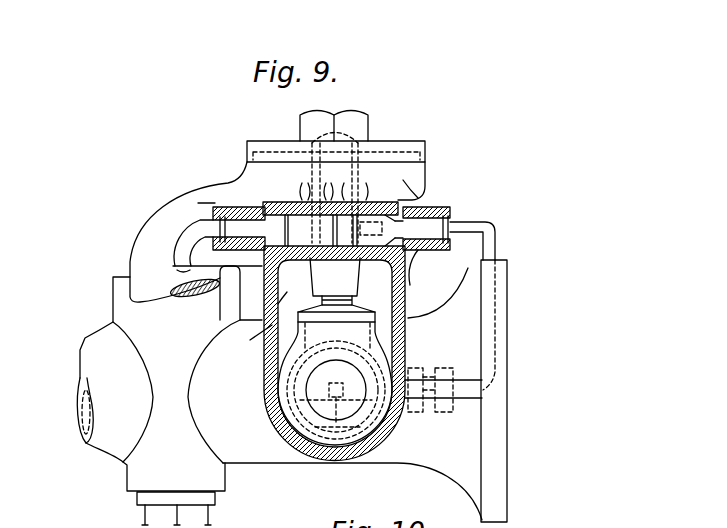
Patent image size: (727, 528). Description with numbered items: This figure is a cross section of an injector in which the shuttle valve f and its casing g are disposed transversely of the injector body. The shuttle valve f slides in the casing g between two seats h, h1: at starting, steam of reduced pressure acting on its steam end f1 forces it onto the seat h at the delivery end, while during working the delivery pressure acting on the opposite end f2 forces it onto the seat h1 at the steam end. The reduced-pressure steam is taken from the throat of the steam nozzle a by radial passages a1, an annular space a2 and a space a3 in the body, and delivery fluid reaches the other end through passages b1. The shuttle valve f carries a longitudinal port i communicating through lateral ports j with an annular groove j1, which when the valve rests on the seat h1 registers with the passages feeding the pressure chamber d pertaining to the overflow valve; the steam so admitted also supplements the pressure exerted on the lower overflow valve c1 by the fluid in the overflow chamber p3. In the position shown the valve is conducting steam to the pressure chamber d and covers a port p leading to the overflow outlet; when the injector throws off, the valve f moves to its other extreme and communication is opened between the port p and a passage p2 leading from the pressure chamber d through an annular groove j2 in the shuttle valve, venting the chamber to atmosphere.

The steam nozzle a is at (277, 340).
The radial passages a1 is at (394, 441).
The annular space a2 is at (313, 460).
The space a3 is at (490, 242).
The passages b1 is at (180, 254).
The lower overflow valve c1 is at (336, 312).
The pressure chamber d is at (356, 134).
The shuttle valve f is at (360, 300).
The steam end f1 is at (438, 293).
The delivery end f2 is at (241, 293).
The casing g is at (411, 179).
The seat h is at (219, 230).
The seat h1 is at (428, 200).
The longitudinal port i is at (421, 252).
The lateral ports j is at (336, 298).
The annular groove j1 is at (362, 198).
The annular groove j2 is at (338, 200).
The port p is at (288, 284).
The passage p2 is at (255, 183).
The overflow chamber p3 is at (248, 334).